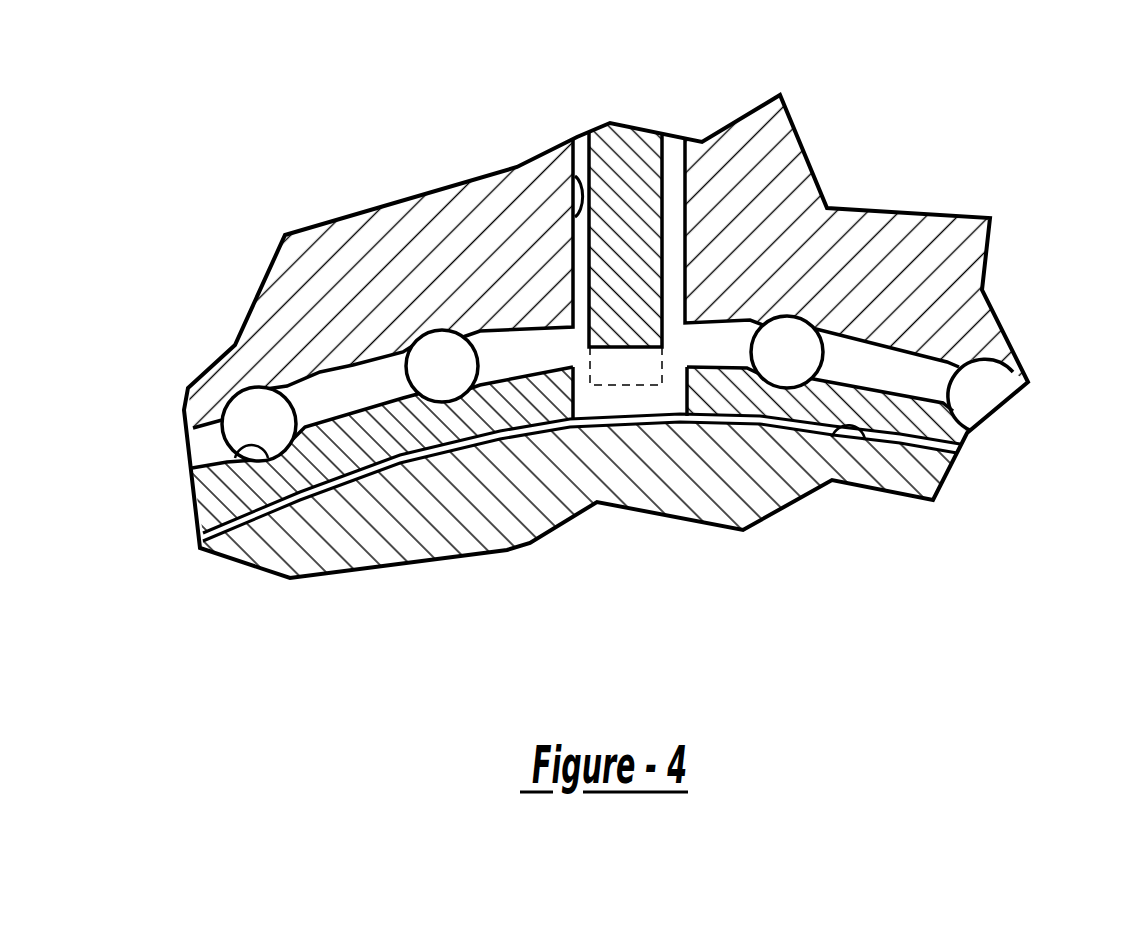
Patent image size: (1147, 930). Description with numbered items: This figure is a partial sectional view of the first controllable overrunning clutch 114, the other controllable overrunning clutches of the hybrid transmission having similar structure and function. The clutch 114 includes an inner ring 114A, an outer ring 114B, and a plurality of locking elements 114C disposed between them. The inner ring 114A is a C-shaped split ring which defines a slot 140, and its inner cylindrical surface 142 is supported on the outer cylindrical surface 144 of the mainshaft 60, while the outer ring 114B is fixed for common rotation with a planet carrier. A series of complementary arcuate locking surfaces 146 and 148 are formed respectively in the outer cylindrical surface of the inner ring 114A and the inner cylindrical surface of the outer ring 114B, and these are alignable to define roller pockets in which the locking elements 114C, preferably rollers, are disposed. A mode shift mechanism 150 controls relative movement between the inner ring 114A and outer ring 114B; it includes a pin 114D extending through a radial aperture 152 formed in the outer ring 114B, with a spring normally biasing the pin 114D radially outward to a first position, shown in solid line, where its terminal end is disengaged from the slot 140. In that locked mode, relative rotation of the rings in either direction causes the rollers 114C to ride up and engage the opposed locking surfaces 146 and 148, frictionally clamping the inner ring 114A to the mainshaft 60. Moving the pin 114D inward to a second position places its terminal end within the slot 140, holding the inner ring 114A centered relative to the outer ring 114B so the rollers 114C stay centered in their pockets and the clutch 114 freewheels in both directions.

The mainshaft 60 is at (450, 498).
The first controllable overrunning clutch 114 is at (893, 167).
The inner ring 114A is at (943, 437).
The outer ring 114B is at (960, 255).
The locking elements 114C is at (990, 380).
The pin 114D is at (613, 147).
The slot 140 is at (685, 395).
The inner cylindrical surface 142 is at (904, 448).
The outer cylindrical surface 144 is at (832, 437).
The arcuate locking surfaces 146 is at (235, 458).
The arcuate locking surfaces 148 is at (258, 386).
The mode shift mechanism 150 is at (662, 102).
The radial aperture 152 is at (575, 176).